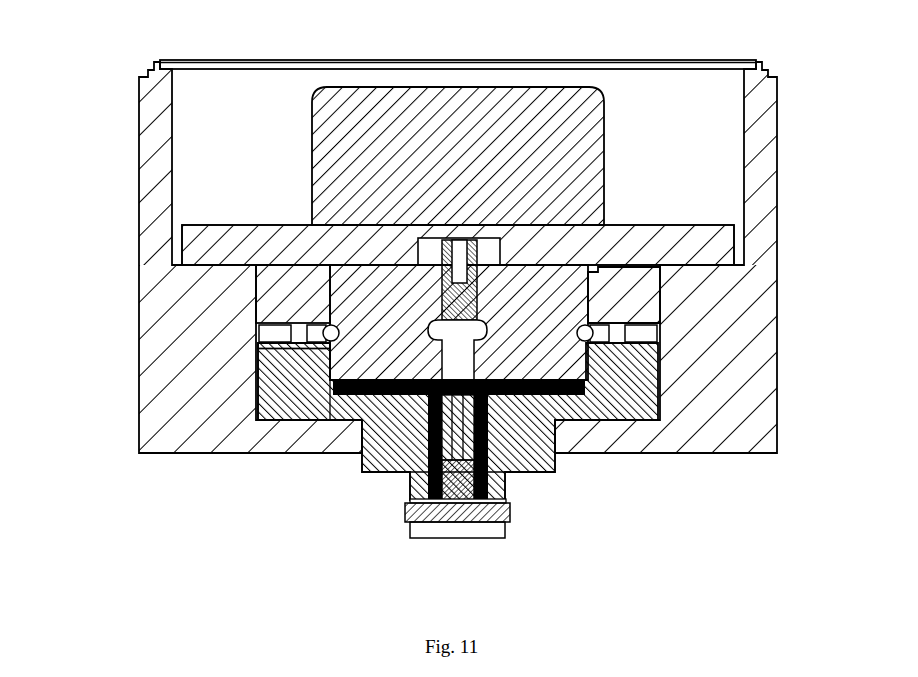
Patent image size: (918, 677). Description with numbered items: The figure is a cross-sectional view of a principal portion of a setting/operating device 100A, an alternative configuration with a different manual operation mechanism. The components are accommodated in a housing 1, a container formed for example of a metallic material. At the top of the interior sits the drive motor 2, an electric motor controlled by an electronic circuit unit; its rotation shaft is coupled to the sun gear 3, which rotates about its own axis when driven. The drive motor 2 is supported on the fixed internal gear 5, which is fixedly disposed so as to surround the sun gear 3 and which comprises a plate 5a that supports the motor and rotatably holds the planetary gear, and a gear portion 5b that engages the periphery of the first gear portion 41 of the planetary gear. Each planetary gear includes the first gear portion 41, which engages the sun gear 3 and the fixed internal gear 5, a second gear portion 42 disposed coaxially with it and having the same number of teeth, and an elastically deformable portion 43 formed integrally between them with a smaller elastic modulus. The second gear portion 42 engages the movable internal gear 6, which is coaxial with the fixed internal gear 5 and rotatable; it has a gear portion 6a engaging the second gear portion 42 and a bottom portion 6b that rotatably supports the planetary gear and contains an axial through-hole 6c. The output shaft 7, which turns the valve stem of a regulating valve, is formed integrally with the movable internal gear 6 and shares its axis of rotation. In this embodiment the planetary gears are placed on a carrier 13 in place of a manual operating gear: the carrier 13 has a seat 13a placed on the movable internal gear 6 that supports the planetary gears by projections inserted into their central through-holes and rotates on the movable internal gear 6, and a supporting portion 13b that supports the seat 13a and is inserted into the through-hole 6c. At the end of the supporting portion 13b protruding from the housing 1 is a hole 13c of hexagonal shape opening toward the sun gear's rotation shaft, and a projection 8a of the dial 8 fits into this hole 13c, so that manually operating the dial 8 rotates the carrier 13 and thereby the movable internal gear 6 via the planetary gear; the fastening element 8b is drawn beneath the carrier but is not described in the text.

The setting/operating device 100A is at (774, 45).
The housing 1 is at (765, 149).
The drive motor 2 is at (449, 86).
The sun gear 3 is at (480, 308).
The fixed internal gear 5 is at (439, 274).
The plate 5a is at (185, 245).
The gear portion 5b is at (265, 283).
The first gear portion 41 is at (333, 305).
The elastically deformable portion 43 is at (298, 330).
The second gear portion 42 is at (300, 352).
The movable internal gear 6 is at (353, 421).
The gear portion 6a is at (262, 385).
The bottom portion 6b is at (290, 432).
The through-hole 6c is at (410, 475).
The carrier 13 is at (598, 441).
The seat 13a is at (587, 390).
The supporting portion 13b is at (560, 426).
The hole 13c is at (508, 470).
The dial 8 is at (387, 510).
The projection 8a is at (412, 490).
The nut 8b is at (405, 513).
The output shaft 7 is at (508, 523).